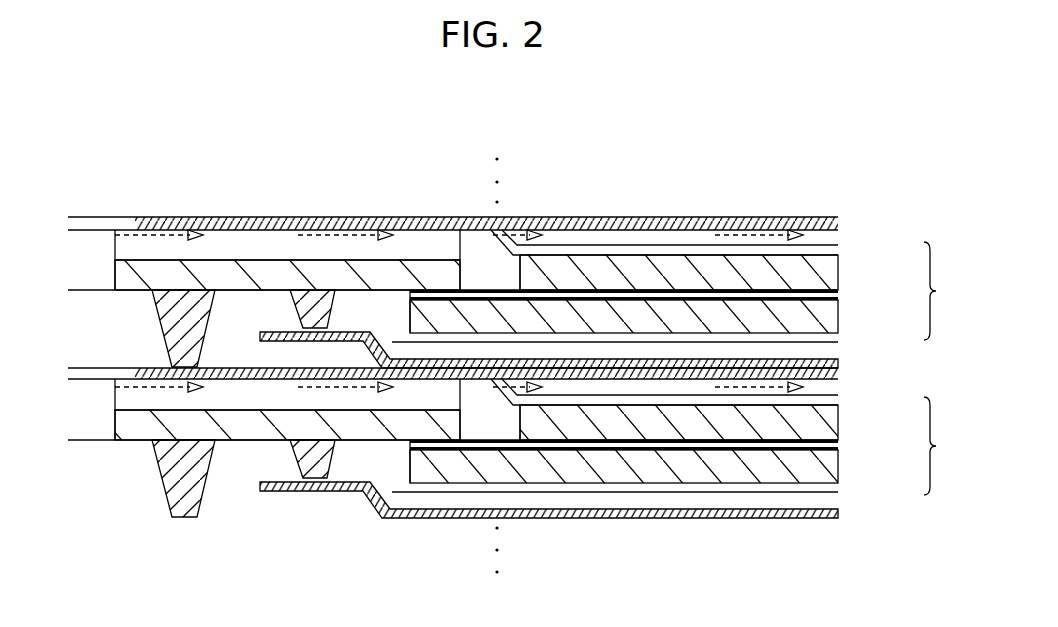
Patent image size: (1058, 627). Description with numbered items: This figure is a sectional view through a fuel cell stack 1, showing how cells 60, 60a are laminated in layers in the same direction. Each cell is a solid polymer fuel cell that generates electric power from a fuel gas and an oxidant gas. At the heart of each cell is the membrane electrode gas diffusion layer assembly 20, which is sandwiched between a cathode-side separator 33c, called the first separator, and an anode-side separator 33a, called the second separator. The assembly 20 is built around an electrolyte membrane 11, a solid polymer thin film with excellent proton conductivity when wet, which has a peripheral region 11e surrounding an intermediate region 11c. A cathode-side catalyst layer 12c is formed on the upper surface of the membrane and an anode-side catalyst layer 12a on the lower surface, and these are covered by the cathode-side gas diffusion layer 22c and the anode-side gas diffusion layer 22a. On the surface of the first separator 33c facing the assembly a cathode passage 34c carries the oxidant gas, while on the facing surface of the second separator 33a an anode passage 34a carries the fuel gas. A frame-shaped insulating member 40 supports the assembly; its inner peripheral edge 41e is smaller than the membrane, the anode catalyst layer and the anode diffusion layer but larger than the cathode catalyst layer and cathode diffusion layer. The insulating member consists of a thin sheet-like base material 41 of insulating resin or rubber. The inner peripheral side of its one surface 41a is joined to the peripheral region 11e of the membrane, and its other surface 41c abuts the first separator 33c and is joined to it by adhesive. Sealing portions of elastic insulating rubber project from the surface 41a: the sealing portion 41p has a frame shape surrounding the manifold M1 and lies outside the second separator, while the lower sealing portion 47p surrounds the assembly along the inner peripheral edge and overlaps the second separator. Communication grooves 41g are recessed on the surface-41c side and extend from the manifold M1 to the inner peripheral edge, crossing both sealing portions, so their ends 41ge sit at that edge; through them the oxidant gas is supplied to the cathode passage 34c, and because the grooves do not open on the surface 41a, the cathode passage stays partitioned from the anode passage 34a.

The fuel cell stack 1 is at (823, 156).
The cell 60 is at (843, 224).
The cell 60a is at (854, 519).
The membrane electrode gas diffusion layer assembly 20 is at (944, 368).
The electrolyte membrane 11 is at (838, 296).
The intermediate region 11c is at (568, 290).
The peripheral region 11e is at (447, 288).
The cathode-side catalyst layer 12c is at (835, 289).
The anode-side catalyst layer 12a is at (836, 300).
The cathode-side gas diffusion layer 22c is at (832, 267).
The anode-side gas diffusion layer 22a is at (833, 325).
The cathode-side separator 33c is at (838, 223).
The anode-side separator 33a is at (838, 361).
The cathode passage 34c is at (607, 232).
The anode passage 34a is at (827, 343).
The insulating member 40 is at (120, 304).
The base material 41 is at (136, 293).
The one surface 41a is at (237, 466).
The other surface 41c is at (212, 217).
The inner peripheral edge 41e is at (462, 273).
The communication grooves 41g is at (262, 248).
The ends of the communication grooves 41ge is at (470, 243).
The sealing portion 41p is at (205, 311).
The sealing portion 47p is at (337, 311).
The manifold M1 is at (78, 329).